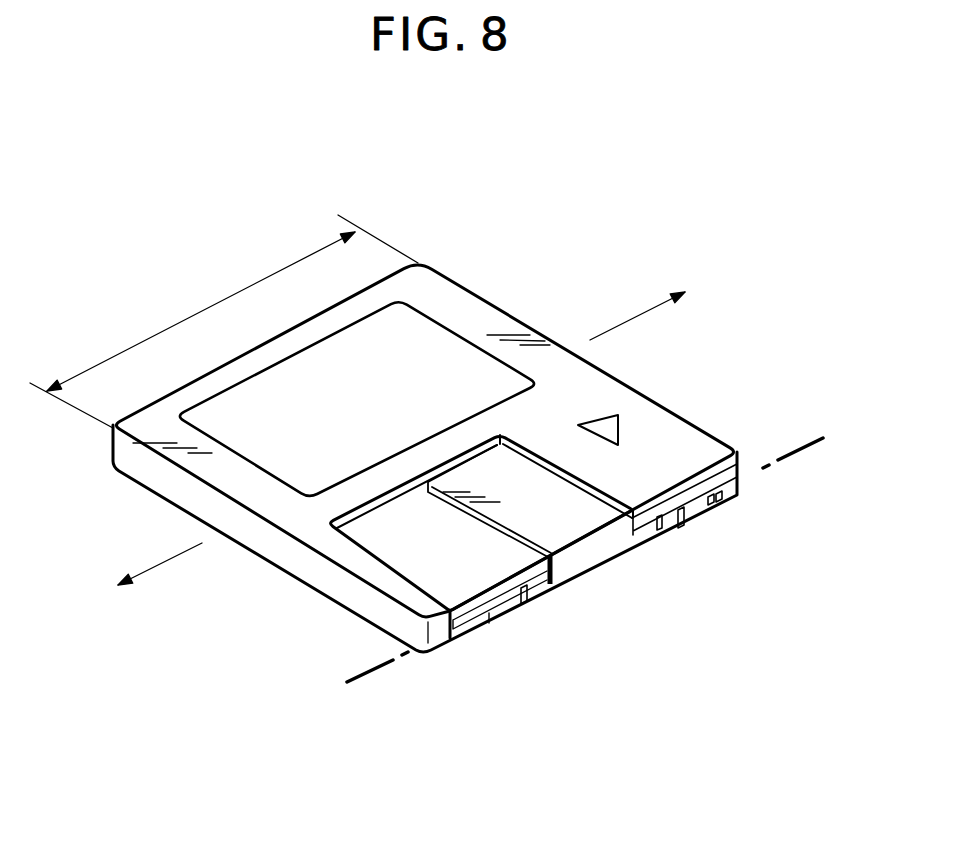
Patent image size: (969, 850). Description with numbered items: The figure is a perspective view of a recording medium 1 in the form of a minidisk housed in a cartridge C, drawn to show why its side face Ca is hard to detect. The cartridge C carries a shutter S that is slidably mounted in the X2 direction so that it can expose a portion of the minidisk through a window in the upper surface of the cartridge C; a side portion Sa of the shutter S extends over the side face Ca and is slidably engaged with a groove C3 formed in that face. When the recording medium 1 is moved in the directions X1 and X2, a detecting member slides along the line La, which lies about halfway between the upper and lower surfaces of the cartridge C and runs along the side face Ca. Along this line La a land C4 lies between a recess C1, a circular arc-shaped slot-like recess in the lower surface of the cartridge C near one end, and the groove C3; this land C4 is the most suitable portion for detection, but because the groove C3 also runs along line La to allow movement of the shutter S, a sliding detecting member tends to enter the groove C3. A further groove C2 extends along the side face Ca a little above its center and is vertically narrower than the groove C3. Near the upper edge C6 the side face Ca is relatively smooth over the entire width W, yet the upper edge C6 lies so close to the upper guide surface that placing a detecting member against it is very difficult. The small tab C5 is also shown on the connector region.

The recording medium 1 is at (237, 562).
The cartridge C is at (427, 357).
The shutter S is at (505, 467).
The side portion of the shutter Sa is at (598, 548).
The side face of the cartridge Ca is at (587, 583).
The recess C1 is at (708, 505).
The groove C2 is at (705, 482).
The groove C3 is at (487, 618).
The land C4 is at (707, 500).
The terminal tab C5 is at (528, 602).
The upper edge C6 is at (669, 497).
The width W is at (224, 321).
The direction X1 is at (663, 300).
The direction X2 is at (134, 581).
The line La is at (598, 563).